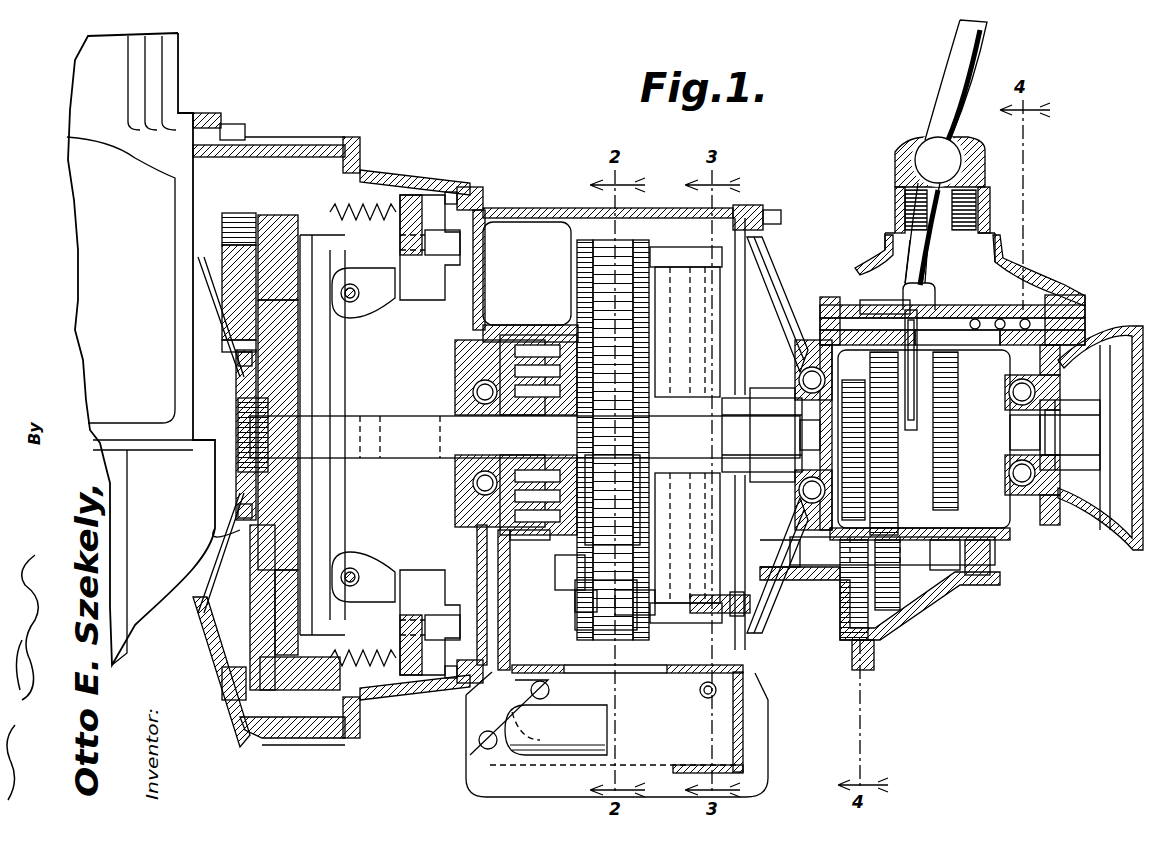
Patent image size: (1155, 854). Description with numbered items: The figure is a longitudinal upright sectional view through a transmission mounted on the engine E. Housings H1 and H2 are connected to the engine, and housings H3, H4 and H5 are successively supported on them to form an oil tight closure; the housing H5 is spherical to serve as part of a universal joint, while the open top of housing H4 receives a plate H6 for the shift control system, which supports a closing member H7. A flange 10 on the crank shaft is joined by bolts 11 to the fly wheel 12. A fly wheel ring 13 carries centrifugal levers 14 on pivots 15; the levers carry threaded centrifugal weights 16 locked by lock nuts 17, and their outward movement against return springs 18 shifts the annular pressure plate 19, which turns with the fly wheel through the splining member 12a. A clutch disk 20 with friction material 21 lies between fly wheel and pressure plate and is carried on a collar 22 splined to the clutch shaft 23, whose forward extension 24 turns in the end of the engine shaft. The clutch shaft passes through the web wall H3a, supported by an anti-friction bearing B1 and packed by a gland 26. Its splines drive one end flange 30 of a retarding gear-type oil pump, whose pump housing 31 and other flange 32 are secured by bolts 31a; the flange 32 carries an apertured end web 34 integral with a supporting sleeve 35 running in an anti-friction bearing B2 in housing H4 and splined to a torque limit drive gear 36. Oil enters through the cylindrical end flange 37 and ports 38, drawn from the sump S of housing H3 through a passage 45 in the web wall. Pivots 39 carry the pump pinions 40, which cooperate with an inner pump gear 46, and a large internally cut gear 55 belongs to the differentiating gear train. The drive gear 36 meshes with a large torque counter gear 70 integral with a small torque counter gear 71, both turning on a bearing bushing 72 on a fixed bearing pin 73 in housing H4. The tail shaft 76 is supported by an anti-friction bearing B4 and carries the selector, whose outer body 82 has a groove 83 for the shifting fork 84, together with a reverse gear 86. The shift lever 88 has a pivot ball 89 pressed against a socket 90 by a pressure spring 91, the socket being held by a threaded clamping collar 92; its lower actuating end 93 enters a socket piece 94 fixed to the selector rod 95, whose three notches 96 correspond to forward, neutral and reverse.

The engine E is at (100, 232).
The housing H1 is at (280, 150).
The housing H2 is at (400, 180).
The housing H3 is at (528, 208).
The web wall H3a is at (485, 275).
The housing section H4 is at (778, 290).
The housing H5 is at (1110, 335).
The plate H6 is at (1082, 305).
The closing member H7 is at (1030, 282).
The flange 10 is at (245, 380).
The bolts 11 is at (245, 360).
The fly wheel 12 is at (225, 240).
The splining member 12a is at (300, 228).
The fly wheel ring 13 is at (345, 215).
The centrifugal levers 14 is at (365, 300).
The pivots 15 is at (356, 300).
The centrifugal weights 16 is at (425, 285).
The lock nuts 17 is at (440, 270).
The return springs 18 is at (470, 205).
The annular pressure plate 19 is at (310, 300).
The clutch disk 20 is at (270, 530).
The friction material 21 is at (275, 318).
The collar 22 is at (305, 482).
The clutch shaft 23 is at (398, 430).
The forward extension 24 is at (250, 440).
The gland 26 is at (470, 485).
The anti-friction bearing B1 is at (470, 500).
The anti-friction bearing B2 is at (805, 482).
The anti-friction bearing B4 is at (1022, 495).
The end flange 30 is at (578, 305).
The pump housing 31 is at (608, 248).
The bolts 31a is at (580, 610).
The pump flange 32 is at (645, 262).
The apertured end web 34 is at (785, 578).
The supporting sleeve 35 is at (690, 605).
The torque limit drive gear 36 is at (828, 330).
The cylindrical end flange 37 is at (540, 540).
The ports 38 is at (560, 565).
The pivots 39 is at (575, 592).
The pump pinions 40 is at (625, 632).
The passage 45 is at (490, 660).
The inner pump gear 46 is at (600, 490).
The large internally cut gear 55 is at (688, 300).
The large torque counter gear 70 is at (850, 590).
The small torque counter gear 71 is at (885, 600).
The bearing bushing 72 is at (930, 590).
The fixed bearing pin 73 is at (960, 580).
The tail shaft 76 is at (1090, 422).
The outer body 82 is at (870, 308).
The groove 83 is at (930, 462).
The shifting fork 84 is at (935, 440).
The reverse gear 86 is at (955, 395).
The shift lever 88 is at (950, 90).
The pivot ball 89 is at (928, 148).
The socket 90 is at (978, 158).
The pressure spring 91 is at (895, 213).
The threaded clamping collar 92 is at (895, 178).
The lower actuating end 93 is at (912, 250).
The socket piece 94 is at (903, 297).
The selector rod 95 is at (960, 320).
The notches 96 is at (995, 320).
The sump S is at (760, 740).